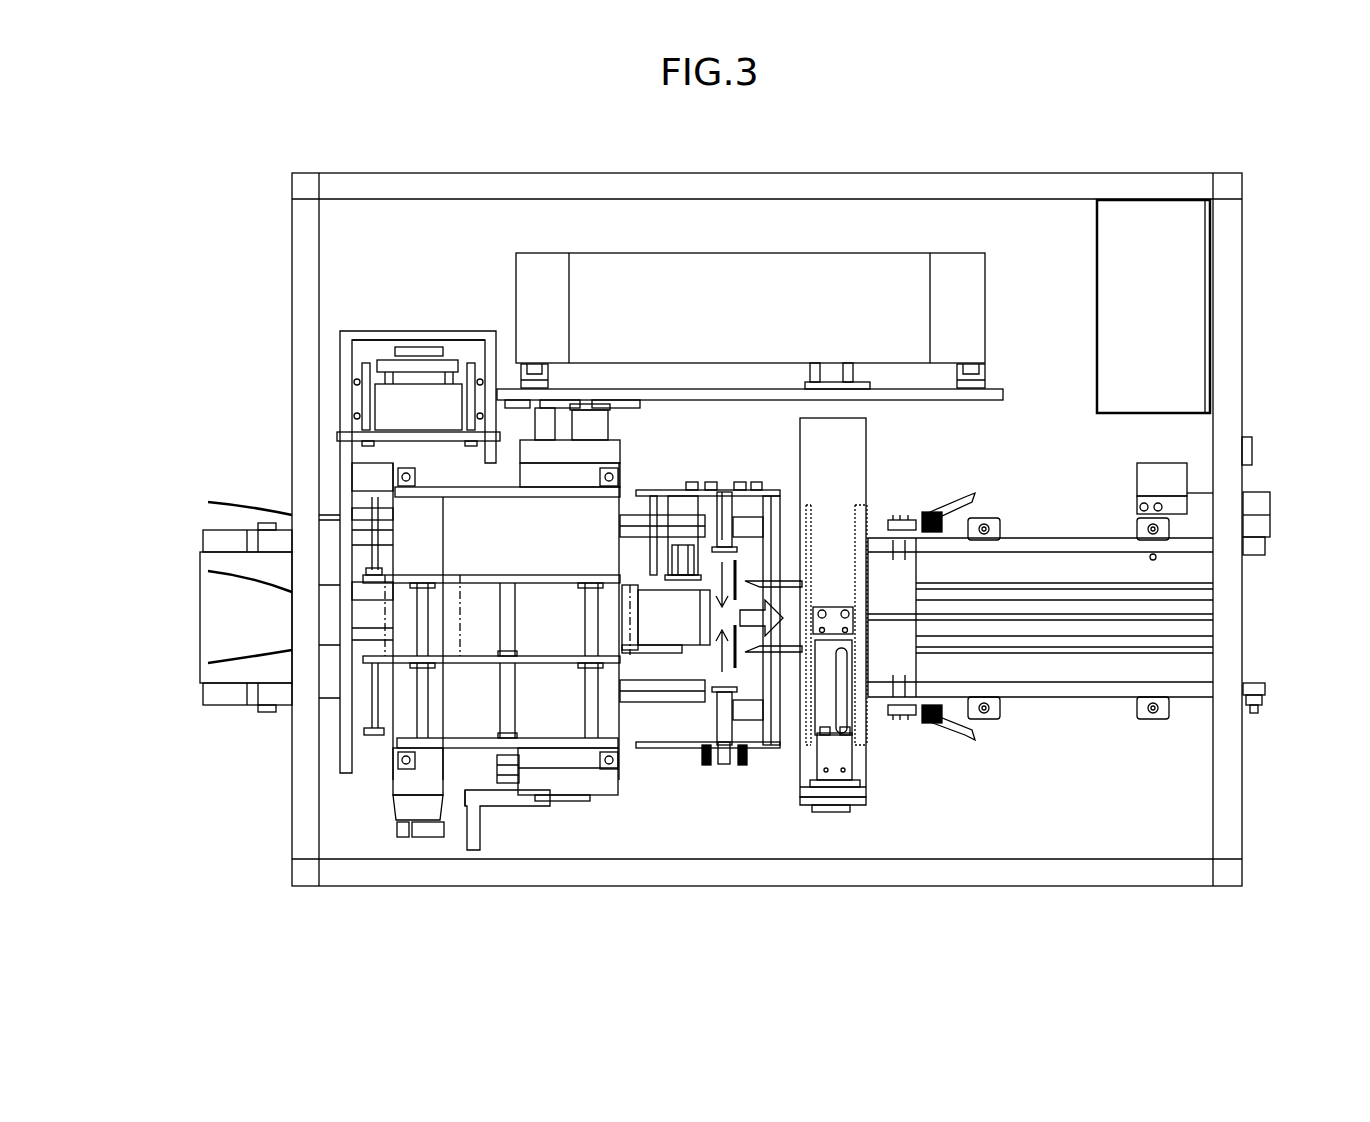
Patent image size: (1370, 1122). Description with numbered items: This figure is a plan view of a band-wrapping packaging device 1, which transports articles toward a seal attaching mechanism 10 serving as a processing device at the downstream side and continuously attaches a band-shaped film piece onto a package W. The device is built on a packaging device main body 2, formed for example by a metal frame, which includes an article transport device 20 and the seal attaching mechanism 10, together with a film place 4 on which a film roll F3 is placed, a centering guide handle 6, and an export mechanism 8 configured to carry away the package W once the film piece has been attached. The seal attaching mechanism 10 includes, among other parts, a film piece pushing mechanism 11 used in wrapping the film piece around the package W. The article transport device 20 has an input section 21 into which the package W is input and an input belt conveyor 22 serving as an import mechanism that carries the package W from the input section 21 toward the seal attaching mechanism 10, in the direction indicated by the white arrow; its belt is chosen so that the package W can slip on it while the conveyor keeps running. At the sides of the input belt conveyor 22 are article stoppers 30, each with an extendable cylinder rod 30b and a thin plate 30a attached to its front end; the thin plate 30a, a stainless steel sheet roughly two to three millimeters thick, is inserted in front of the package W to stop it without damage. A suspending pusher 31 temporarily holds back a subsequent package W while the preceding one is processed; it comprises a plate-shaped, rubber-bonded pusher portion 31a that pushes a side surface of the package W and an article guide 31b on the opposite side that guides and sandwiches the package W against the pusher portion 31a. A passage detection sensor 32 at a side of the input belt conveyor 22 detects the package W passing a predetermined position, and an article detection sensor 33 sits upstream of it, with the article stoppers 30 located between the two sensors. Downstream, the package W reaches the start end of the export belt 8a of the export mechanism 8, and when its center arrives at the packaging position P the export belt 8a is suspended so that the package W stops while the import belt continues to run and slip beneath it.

The band-wrapping packaging device 1 is at (233, 152).
The packaging device main body 2 is at (290, 262).
The film place 4 is at (468, 657).
The centering guide handle 6 is at (517, 805).
The export mechanism 8 is at (1068, 705).
The export belt 8a is at (1203, 635).
The seal attaching mechanism 10 is at (802, 748).
The film piece pushing mechanism 11 is at (865, 748).
The article transport device 20 is at (238, 452).
The input section 21 is at (215, 616).
The input belt conveyor 22 is at (637, 640).
The article stopper 30 is at (768, 492).
The thin plate 30a is at (762, 563).
The cylinder rod 30b is at (748, 503).
The suspending pusher 31 is at (684, 495).
The pusher portion 31a is at (698, 660).
The article guide 31b is at (703, 600).
The passage detection sensor 32 is at (744, 765).
The article detection sensor 33 is at (708, 765).
The package W is at (675, 512).
The packaging position P is at (835, 607).
The film roll F3 is at (567, 587).